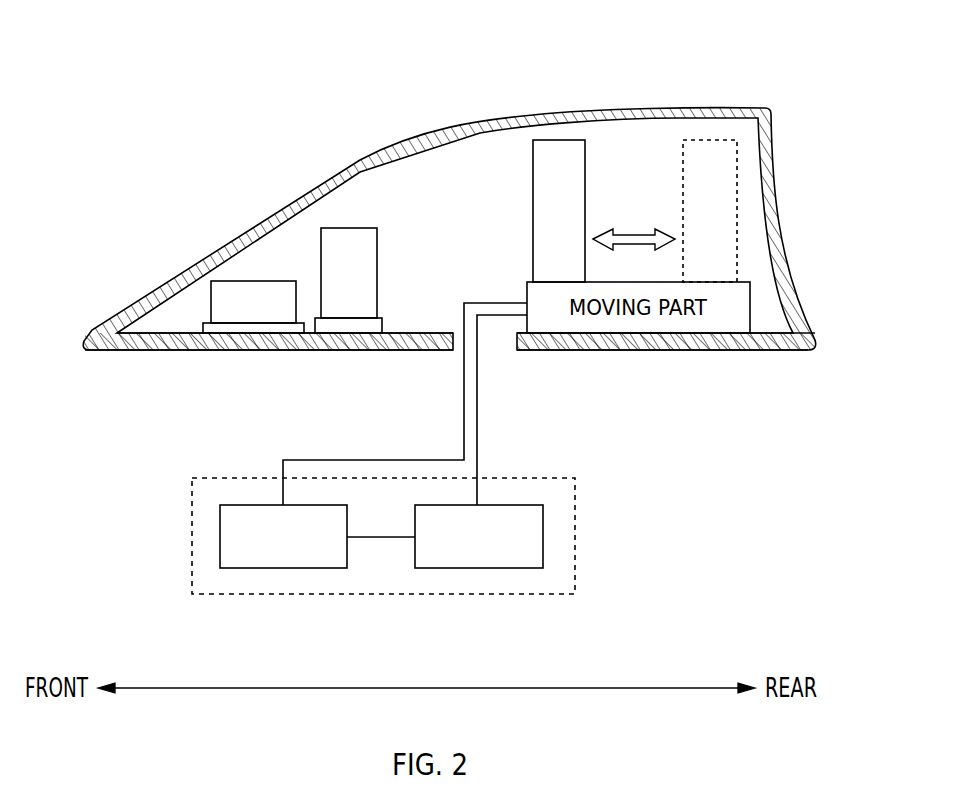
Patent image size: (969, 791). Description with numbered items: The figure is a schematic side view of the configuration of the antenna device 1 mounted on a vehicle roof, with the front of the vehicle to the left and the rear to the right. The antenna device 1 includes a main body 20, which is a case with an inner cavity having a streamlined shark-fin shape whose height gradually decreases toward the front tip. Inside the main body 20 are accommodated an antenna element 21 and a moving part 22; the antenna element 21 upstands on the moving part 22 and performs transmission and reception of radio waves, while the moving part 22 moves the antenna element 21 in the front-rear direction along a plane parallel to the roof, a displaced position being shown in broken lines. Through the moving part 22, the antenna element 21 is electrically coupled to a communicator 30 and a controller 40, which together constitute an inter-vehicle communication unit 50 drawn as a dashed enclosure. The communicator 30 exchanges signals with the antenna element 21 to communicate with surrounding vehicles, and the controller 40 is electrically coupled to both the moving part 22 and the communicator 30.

The antenna device 1 is at (628, 67).
The main body 20 is at (373, 155).
The antenna element 21 is at (560, 140).
The moving part 22 is at (605, 337).
The communicator 30 is at (277, 570).
The controller 40 is at (477, 570).
The inter-vehicle communication unit 50 is at (384, 570).